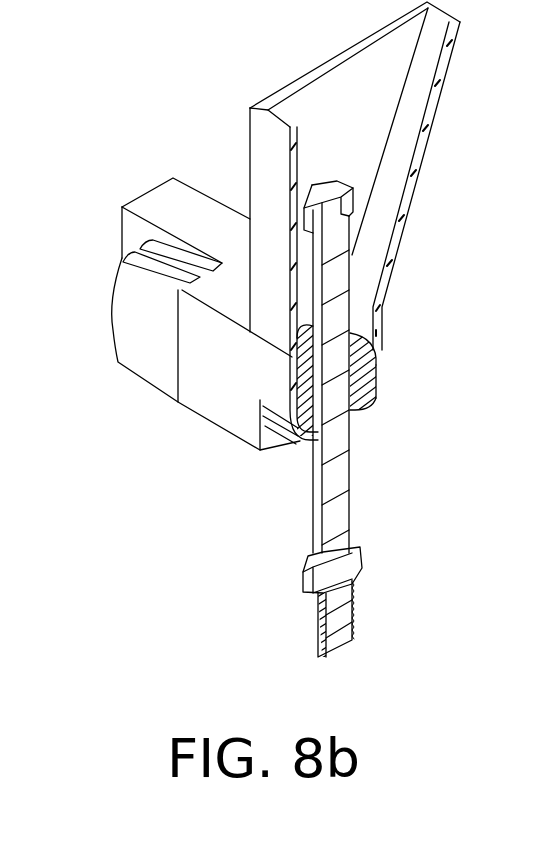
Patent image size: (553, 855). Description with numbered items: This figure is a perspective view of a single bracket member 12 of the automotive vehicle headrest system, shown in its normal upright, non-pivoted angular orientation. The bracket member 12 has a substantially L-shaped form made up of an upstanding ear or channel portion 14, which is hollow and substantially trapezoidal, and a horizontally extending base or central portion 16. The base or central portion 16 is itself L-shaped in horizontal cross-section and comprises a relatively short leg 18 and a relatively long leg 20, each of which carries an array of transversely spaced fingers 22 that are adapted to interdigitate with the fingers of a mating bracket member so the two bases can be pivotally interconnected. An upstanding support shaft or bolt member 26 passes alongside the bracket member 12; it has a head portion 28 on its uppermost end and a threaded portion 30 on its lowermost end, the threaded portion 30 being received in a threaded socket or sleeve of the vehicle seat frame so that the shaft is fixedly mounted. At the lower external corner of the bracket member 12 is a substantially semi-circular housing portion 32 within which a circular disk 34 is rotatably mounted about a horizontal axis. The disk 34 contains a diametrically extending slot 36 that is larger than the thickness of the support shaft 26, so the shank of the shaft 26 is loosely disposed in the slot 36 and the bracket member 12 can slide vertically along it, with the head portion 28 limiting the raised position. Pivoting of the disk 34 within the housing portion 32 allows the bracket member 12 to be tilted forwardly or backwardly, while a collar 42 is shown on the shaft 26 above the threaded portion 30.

The bracket member 12 is at (375, 305).
The upstanding ear or channel portion 14 is at (338, 88).
The horizontally extending base or central portion 16 is at (193, 314).
The relatively short leg 18 is at (228, 302).
The relatively long leg 20 is at (197, 203).
The fingers 22 is at (138, 362).
The upstanding support shaft or bolt member 26 is at (347, 467).
The head portion 28 is at (340, 188).
The threaded portion 30 is at (318, 630).
The semi-circular housing portion 32 is at (380, 353).
The circular disk 34 is at (372, 368).
The diametrically extending slot 36 is at (375, 390).
The collar 42 is at (362, 566).